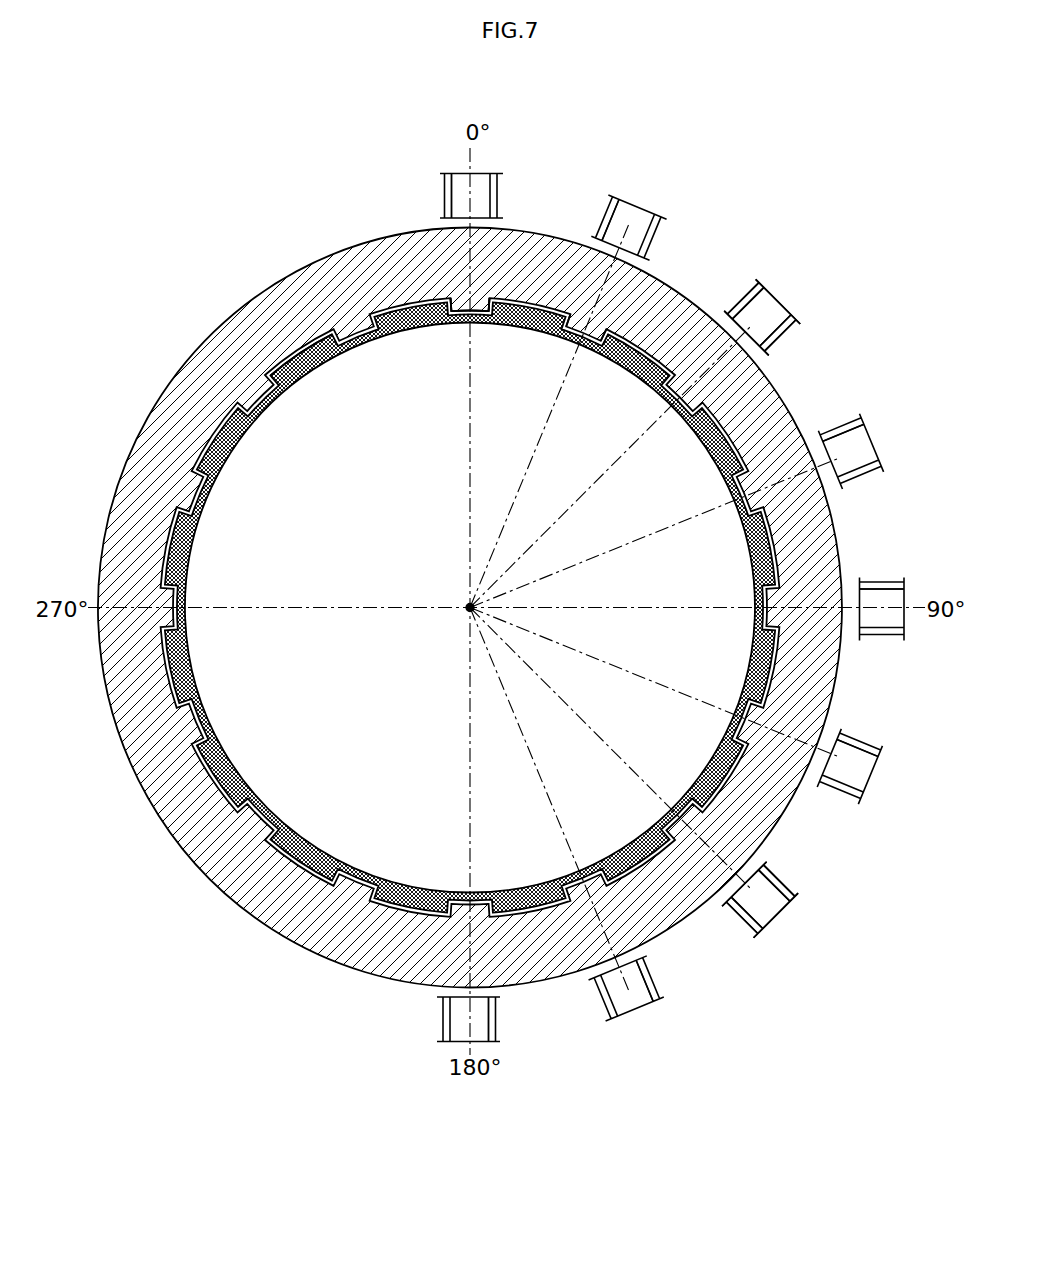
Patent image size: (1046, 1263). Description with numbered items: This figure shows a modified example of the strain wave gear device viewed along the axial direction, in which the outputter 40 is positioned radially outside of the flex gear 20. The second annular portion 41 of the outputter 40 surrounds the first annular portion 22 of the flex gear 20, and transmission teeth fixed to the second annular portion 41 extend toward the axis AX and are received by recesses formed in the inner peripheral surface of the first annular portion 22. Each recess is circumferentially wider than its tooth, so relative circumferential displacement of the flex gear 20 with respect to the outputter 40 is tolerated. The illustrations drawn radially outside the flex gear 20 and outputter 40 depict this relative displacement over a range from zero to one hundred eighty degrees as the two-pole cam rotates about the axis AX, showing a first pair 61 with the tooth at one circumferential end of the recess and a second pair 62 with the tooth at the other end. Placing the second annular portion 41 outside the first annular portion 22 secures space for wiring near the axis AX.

The flex gear 20 is at (325, 372).
The first annular portion 22 is at (297, 378).
The outputter 40 is at (270, 280).
The second annular portion 41 is at (388, 293).
The first pair 61 is at (800, 293).
The second pair 62 is at (808, 937).
The axis AX is at (468, 612).